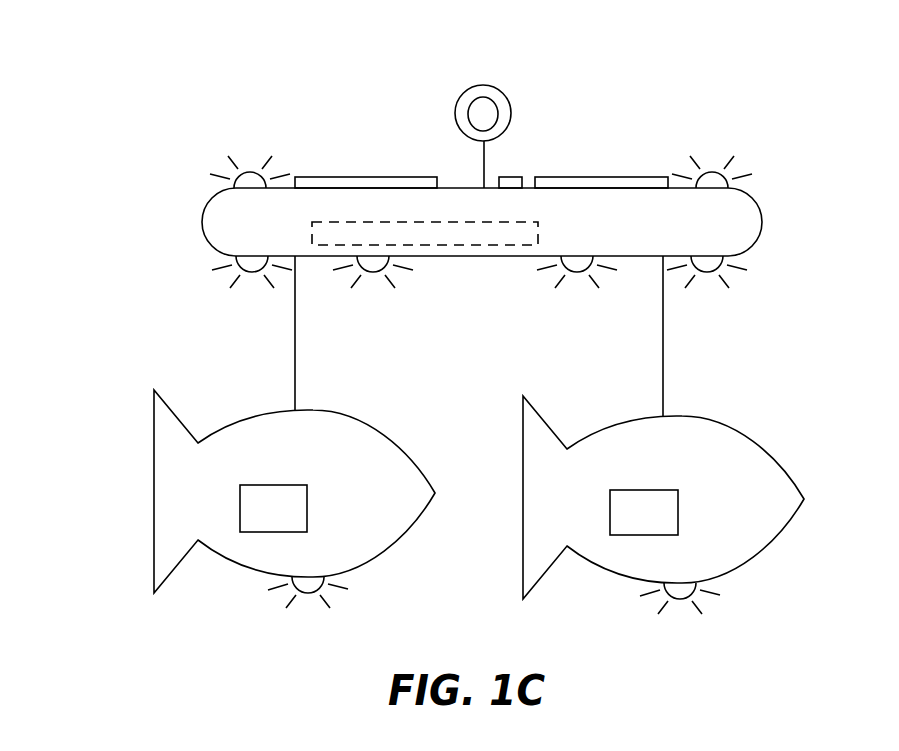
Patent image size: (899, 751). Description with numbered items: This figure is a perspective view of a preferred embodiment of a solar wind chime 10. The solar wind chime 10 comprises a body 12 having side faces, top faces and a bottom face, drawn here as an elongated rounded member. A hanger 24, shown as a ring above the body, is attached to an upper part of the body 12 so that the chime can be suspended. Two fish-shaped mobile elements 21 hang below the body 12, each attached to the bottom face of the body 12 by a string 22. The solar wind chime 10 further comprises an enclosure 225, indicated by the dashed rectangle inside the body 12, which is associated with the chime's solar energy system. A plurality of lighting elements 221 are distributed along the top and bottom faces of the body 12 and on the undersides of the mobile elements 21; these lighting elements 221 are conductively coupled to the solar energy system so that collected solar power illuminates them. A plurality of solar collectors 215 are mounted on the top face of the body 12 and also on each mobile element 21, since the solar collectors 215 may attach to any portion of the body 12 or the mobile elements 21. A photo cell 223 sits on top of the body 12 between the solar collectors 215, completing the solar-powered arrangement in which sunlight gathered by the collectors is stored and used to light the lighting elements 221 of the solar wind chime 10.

The solar wind chime 10 is at (110, 138).
The body 12 is at (762, 224).
The mobile elements 21 is at (393, 435).
The strings 22 is at (295, 360).
The hanger 24 is at (505, 97).
The solar collectors 215 is at (367, 177).
The lighting elements 221 is at (250, 171).
The photo cells 223 is at (510, 177).
The enclosure 225 is at (538, 235).